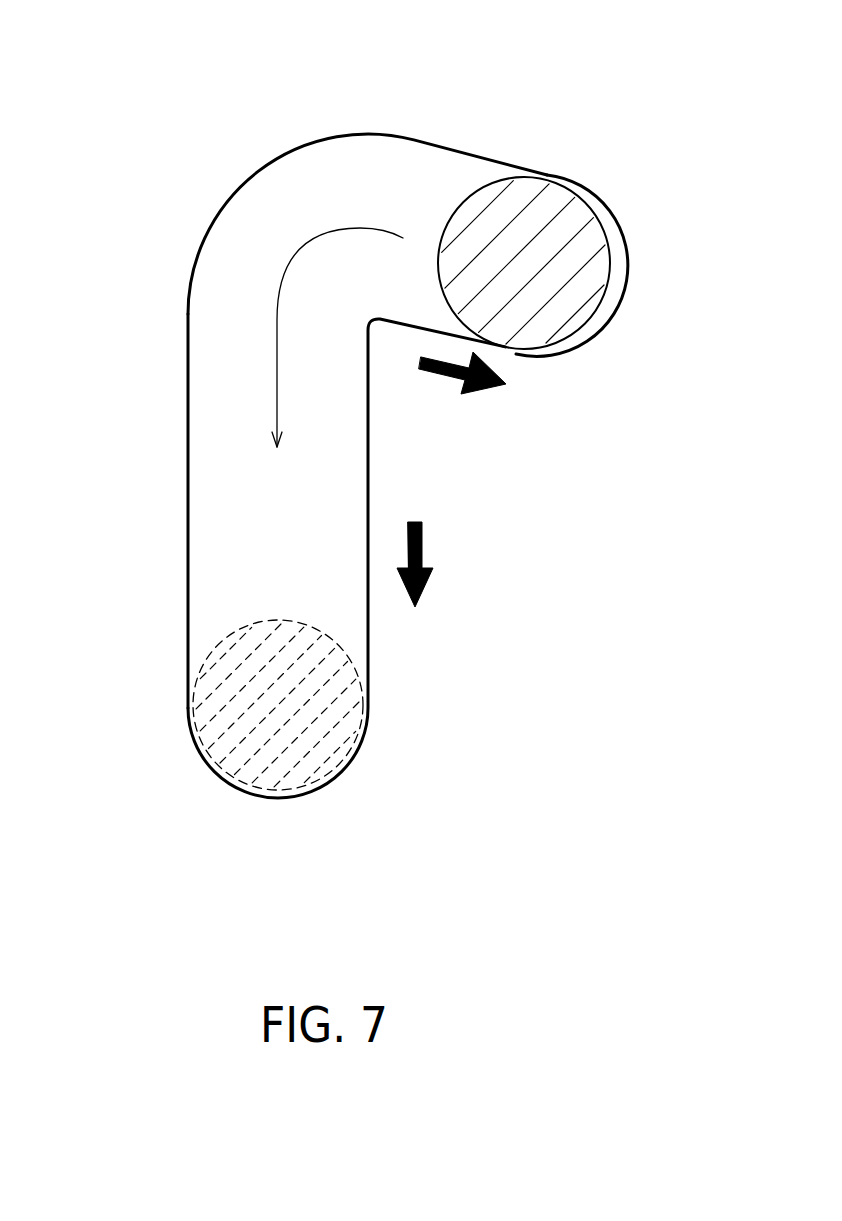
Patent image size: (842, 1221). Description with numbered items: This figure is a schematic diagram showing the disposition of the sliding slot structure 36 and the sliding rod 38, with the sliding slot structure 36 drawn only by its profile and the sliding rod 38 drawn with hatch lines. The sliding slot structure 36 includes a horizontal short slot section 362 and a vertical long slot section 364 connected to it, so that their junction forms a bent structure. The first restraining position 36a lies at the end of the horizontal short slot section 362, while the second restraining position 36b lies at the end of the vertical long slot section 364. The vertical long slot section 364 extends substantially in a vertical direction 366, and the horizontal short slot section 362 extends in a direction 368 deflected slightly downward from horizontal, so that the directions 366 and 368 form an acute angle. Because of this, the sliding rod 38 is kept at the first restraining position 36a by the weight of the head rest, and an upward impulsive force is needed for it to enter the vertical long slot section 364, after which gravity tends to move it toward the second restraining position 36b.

The sliding slot structure 36 is at (375, 409).
The horizontal short slot section 362 is at (408, 157).
The vertical long slot section 364 is at (210, 435).
The vertical direction 366 is at (422, 548).
The direction 368 is at (443, 376).
The first restraining position 36a is at (597, 322).
The second restraining position 36b is at (332, 783).
The sliding rod 38 is at (535, 222).